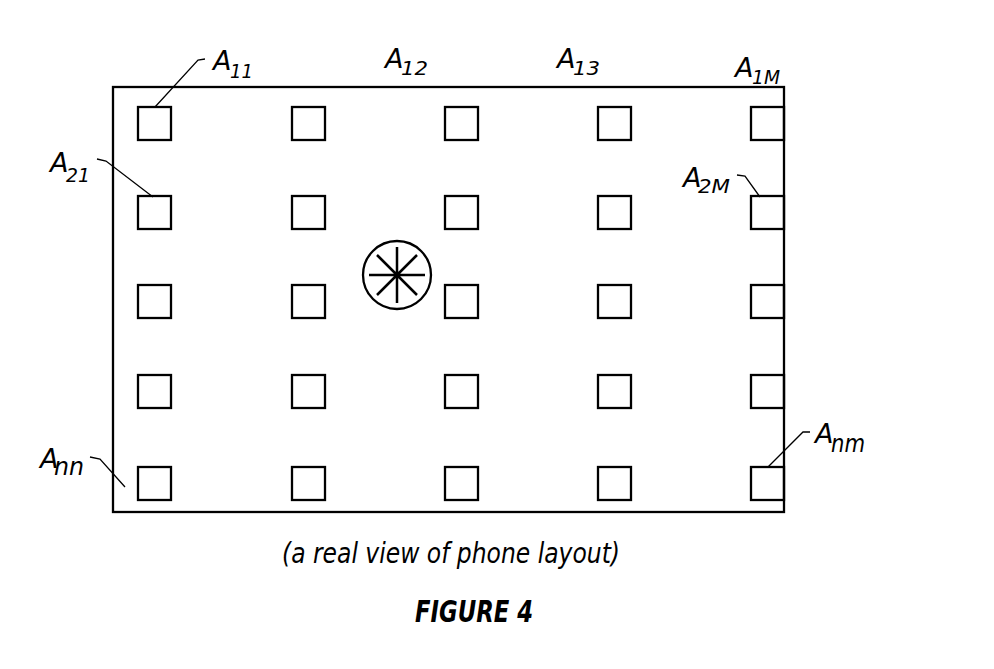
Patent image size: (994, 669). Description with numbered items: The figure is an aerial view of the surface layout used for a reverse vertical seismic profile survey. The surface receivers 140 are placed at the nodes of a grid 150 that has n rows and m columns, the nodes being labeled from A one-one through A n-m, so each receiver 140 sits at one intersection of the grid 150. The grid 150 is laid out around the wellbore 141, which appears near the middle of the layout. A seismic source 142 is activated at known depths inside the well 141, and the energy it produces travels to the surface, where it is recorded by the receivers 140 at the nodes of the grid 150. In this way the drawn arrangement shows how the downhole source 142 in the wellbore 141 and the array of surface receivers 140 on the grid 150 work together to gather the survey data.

The grid 150 is at (662, 87).
The receivers 140 is at (767, 212).
The wellbore 141 is at (430, 265).
The seismic source 142 is at (408, 241).